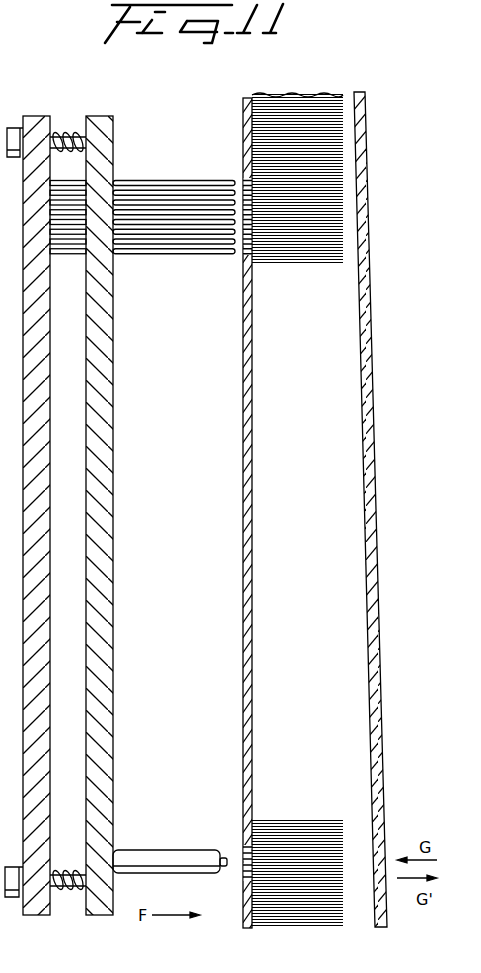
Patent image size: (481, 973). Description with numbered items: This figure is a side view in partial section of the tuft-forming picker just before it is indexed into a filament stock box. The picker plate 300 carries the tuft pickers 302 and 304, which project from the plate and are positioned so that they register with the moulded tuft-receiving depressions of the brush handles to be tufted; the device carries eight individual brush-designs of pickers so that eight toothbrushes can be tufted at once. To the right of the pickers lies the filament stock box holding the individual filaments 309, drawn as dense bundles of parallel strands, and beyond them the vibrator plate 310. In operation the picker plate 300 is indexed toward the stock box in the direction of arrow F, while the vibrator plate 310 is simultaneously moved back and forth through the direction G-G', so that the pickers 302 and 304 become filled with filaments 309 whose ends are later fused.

The picker plate 300 is at (100, 117).
The tuft pickers 302 is at (222, 179).
The tuft pickers 304 is at (180, 853).
The filaments 309 is at (343, 237).
The vibrator plate 310 is at (382, 805).